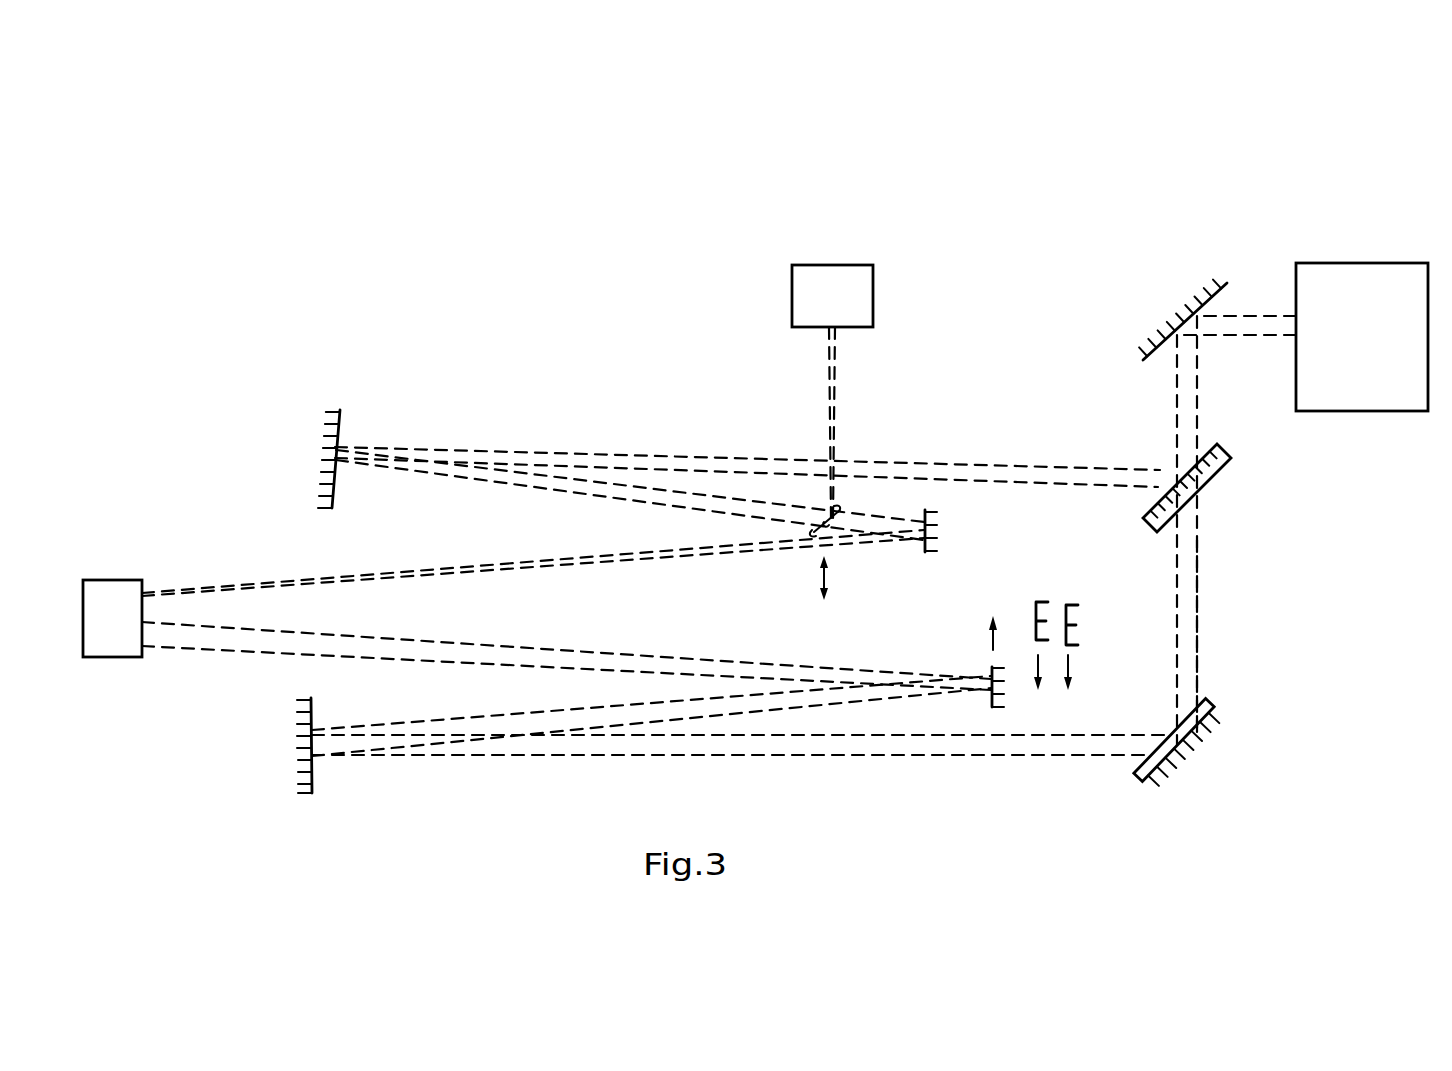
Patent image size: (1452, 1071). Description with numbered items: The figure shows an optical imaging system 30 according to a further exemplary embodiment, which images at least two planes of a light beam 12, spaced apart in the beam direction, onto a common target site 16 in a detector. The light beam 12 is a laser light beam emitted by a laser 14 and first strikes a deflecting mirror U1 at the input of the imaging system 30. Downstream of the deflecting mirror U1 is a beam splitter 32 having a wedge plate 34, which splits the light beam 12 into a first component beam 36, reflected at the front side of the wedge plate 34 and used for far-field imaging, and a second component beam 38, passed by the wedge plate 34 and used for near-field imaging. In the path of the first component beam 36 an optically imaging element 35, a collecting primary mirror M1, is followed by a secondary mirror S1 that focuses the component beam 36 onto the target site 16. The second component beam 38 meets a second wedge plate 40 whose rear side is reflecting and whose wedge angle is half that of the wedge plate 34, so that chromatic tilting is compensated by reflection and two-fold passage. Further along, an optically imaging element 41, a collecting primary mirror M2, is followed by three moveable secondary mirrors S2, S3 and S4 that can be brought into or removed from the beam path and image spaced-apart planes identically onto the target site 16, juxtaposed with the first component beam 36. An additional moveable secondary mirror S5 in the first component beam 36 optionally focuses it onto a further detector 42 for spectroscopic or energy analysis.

The optical imaging system 30 is at (535, 270).
The optically imaging element 35 is at (272, 450).
The optically imaging element 41 is at (268, 781).
The beam splitter 32 is at (1248, 522).
The target site 16 is at (115, 645).
The further detector 42 is at (792, 290).
The collecting primary mirror M1 is at (338, 423).
The collecting primary mirror M2 is at (318, 785).
The secondary mirror S1 is at (920, 547).
The secondary mirror S2 is at (985, 700).
The secondary mirror S3 is at (1036, 602).
The secondary mirror S4 is at (1066, 605).
The additional secondary mirror S5 is at (838, 515).
The wedge plate 34 is at (1232, 458).
The first component beam 36 is at (1012, 475).
The second component beam 38 is at (1183, 627).
The second wedge plate 40 is at (1215, 705).
The deflecting mirror U1 is at (1220, 302).
The light beam 12 is at (1243, 330).
The laser 14 is at (1380, 270).